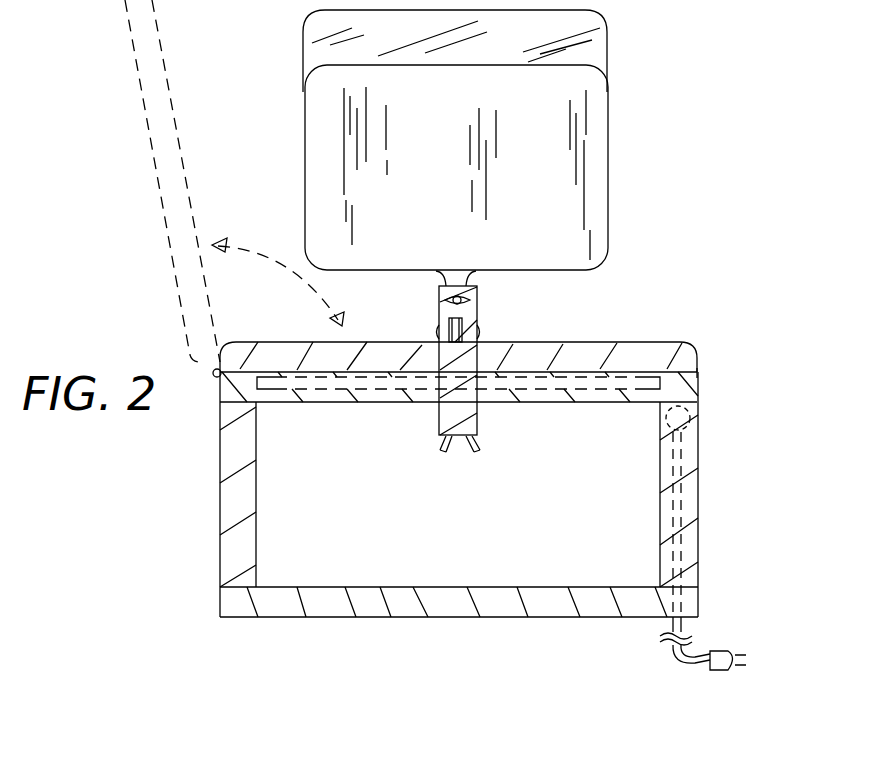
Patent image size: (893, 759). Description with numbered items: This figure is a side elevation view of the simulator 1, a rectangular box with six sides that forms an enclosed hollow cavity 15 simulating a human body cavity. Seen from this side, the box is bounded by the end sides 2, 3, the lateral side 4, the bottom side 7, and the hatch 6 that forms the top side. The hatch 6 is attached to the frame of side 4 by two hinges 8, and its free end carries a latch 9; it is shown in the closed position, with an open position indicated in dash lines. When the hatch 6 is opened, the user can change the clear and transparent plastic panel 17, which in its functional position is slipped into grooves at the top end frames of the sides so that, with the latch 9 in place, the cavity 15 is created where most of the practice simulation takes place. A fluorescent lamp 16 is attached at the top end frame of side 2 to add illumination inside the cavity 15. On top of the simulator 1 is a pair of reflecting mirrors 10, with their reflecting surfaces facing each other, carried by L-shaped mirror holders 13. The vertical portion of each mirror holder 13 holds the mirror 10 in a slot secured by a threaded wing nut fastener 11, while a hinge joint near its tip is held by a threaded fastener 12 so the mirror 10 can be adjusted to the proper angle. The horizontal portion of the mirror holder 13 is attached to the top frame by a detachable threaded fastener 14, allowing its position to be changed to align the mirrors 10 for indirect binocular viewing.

The simulator 1 is at (700, 548).
The end side 2 is at (698, 487).
The end side 3 is at (462, 547).
The lateral side 4 is at (220, 520).
The hatch 6 is at (166, 54).
The bottom side 7 is at (490, 617).
The hinges 8 is at (213, 376).
The latch 9 is at (698, 373).
The reflecting mirrors 10 is at (303, 176).
The threaded wing nut fastener 11 is at (447, 300).
The threaded fastener 12 is at (462, 323).
The mirror holder 13 is at (440, 353).
The threaded fastener 14 is at (480, 437).
The cavity 15 is at (322, 568).
The fluorescent lamp 16 is at (688, 420).
The plastic panel 17 is at (336, 392).